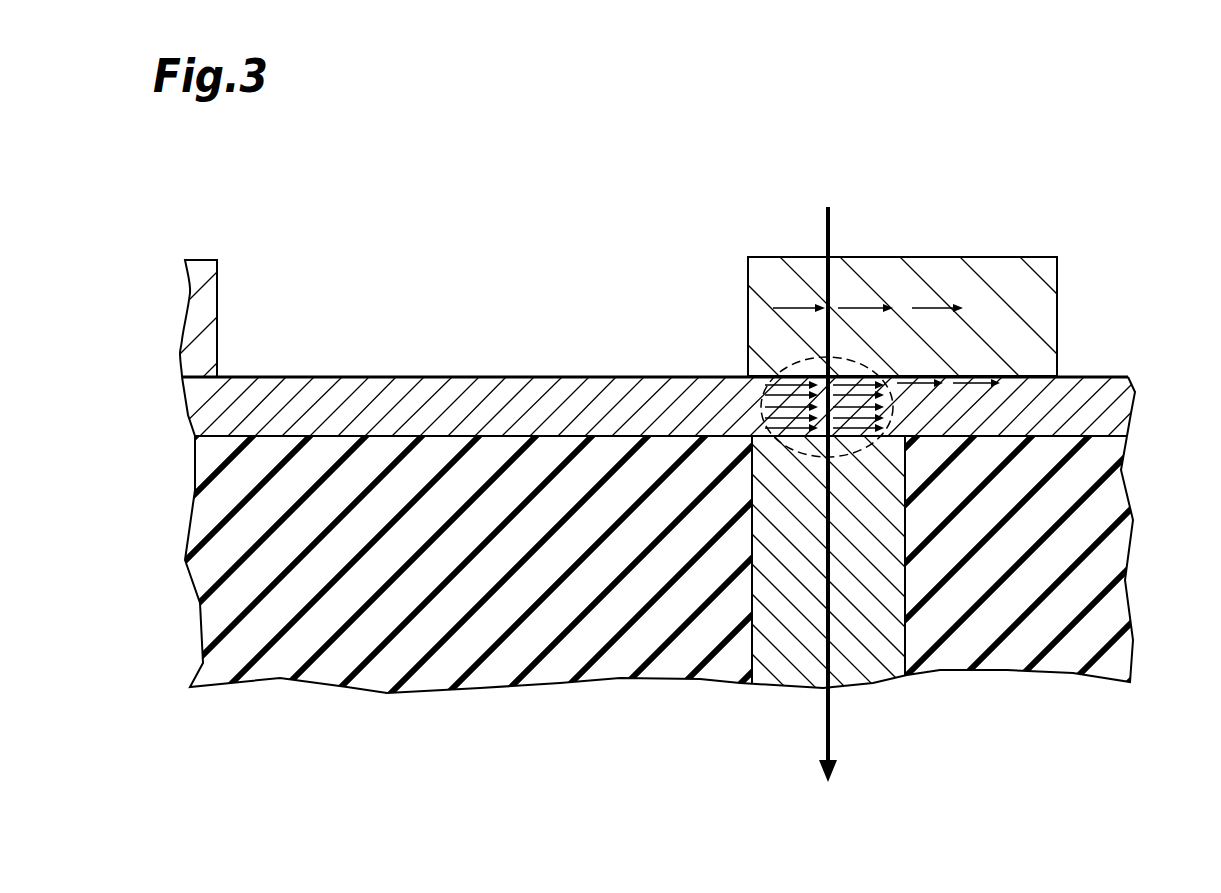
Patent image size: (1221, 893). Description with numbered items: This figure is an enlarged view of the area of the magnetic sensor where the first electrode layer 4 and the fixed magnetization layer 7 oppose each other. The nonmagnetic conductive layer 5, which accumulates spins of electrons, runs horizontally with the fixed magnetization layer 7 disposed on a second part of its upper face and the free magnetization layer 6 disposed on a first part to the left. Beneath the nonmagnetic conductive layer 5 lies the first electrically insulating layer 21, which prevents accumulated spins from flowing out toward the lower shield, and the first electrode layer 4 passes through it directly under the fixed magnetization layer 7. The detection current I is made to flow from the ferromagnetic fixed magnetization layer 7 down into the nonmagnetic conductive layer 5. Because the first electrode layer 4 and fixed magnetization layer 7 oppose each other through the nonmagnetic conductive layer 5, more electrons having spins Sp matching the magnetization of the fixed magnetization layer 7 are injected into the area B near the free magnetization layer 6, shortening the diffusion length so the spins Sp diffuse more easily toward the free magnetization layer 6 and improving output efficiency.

The first electrode layer 4 is at (895, 548).
The nonmagnetic conductive layer 5 is at (1125, 407).
The free magnetization layer 6 is at (205, 317).
The fixed magnetization layer 7 is at (1048, 312).
The first electrically insulating layer 21 is at (492, 662).
The area near the free magnetization layer B is at (790, 358).
The spins Sp is at (795, 437).
The detection current I is at (826, 726).